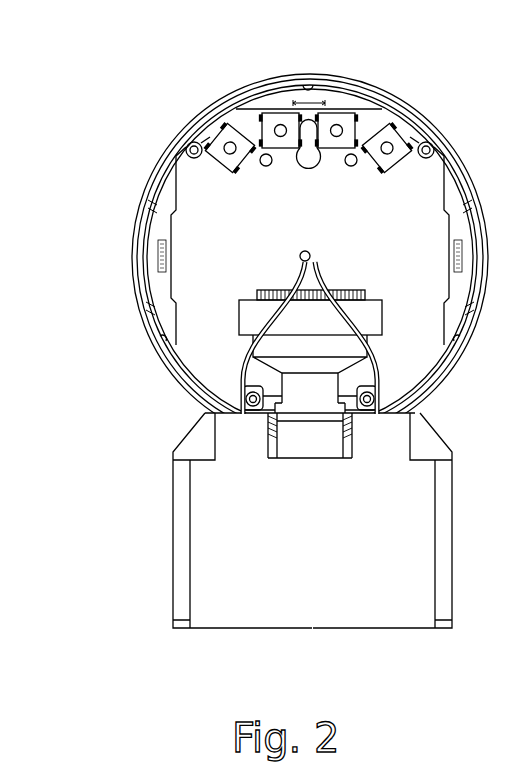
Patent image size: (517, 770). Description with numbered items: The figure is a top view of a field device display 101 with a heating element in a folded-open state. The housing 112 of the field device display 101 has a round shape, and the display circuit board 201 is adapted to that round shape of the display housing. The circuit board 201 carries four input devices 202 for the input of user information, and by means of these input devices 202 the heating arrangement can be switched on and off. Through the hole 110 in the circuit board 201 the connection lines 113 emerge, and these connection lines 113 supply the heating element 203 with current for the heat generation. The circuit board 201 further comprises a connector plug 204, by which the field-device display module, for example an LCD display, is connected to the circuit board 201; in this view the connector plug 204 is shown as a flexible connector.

The field device display 101 is at (104, 178).
The hole 110 is at (315, 322).
The housing 112 is at (264, 422).
The connection lines 113 is at (386, 362).
The display circuit board 201 is at (452, 372).
The input devices 202 is at (235, 93).
The heating element 203 is at (320, 606).
The connector plug 204 is at (238, 292).